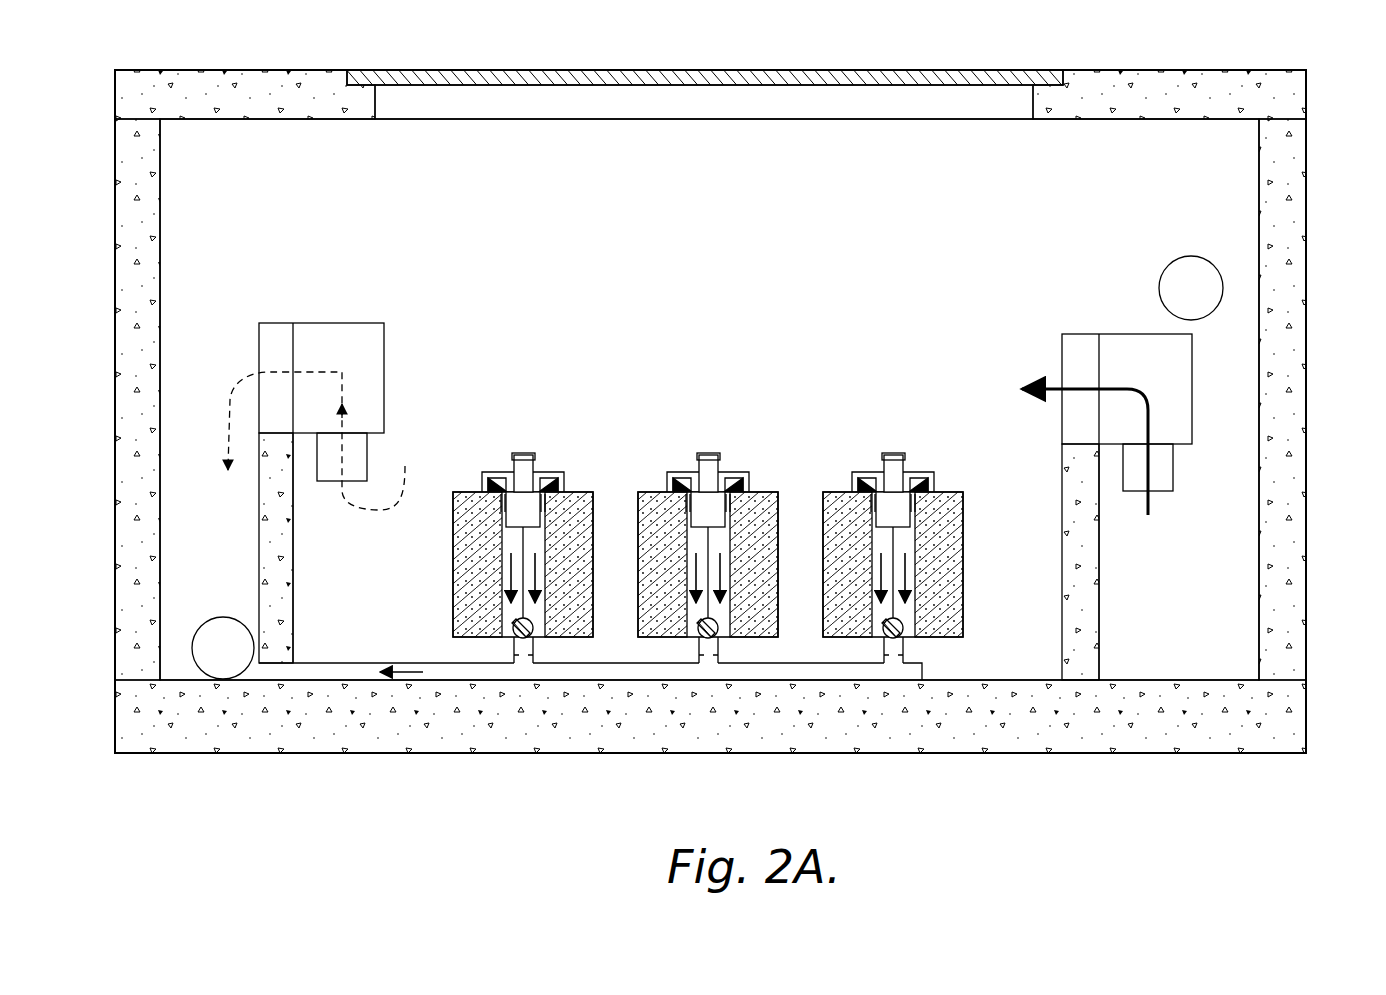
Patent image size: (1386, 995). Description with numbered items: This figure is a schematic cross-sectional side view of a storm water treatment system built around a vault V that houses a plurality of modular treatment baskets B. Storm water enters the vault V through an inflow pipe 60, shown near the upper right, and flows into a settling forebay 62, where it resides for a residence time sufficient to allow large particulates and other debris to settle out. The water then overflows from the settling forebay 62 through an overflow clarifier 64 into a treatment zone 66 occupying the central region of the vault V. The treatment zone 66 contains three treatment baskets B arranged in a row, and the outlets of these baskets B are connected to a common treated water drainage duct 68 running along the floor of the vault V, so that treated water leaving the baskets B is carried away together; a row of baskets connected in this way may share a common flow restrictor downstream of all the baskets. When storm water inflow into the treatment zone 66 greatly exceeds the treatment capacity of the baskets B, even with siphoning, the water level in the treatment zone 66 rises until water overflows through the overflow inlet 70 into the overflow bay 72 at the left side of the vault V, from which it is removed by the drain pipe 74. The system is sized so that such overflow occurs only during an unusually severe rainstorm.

The vault V is at (1336, 240).
The inflow pipe 60 is at (1165, 268).
The settling forebay 62 is at (1182, 585).
The overflow clarifier 64 is at (1180, 414).
The treatment zone 66 is at (746, 378).
The common treated water drainage duct 68 is at (375, 663).
The overflow inlet 70 is at (367, 455).
The overflow bay 72 is at (198, 408).
The drain pipe 74 is at (196, 634).
The treatment basket B is at (585, 492).